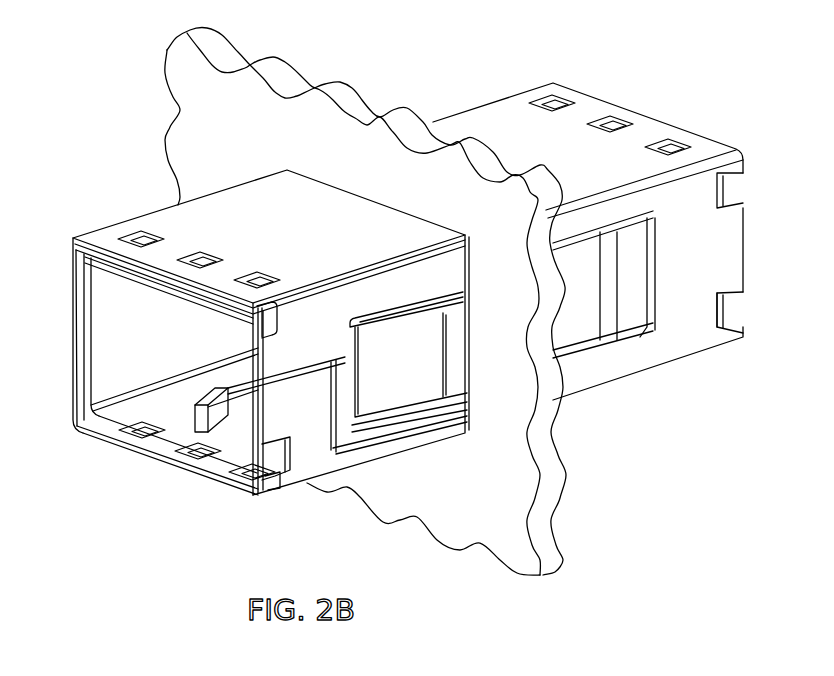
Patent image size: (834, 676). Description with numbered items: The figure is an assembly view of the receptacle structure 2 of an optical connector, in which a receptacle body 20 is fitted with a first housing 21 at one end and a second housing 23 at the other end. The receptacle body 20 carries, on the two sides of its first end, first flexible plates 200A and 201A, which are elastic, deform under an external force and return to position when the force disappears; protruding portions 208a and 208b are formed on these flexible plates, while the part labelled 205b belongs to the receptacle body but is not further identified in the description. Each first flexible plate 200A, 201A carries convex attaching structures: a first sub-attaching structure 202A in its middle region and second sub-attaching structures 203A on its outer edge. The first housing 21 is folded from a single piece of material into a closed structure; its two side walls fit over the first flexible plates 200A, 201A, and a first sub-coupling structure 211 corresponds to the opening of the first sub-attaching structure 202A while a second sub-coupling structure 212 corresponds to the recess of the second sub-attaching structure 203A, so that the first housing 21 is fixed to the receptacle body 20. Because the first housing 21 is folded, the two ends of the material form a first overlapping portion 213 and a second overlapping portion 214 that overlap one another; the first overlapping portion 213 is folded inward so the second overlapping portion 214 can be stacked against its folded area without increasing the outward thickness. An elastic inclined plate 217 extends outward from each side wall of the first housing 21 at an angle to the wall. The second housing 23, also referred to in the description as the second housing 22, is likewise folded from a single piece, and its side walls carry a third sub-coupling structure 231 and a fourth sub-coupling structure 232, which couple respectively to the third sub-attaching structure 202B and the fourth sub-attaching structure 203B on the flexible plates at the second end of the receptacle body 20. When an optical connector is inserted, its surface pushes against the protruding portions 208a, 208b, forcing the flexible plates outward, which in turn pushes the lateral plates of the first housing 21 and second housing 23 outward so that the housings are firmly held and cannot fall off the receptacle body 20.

The receptacle structure 2 is at (139, 107).
The receptacle body 20 is at (122, 438).
The first housing 21 is at (157, 218).
The second housing 22 is at (338, 126).
The second housing 23 is at (535, 95).
The first flexible plate 200A is at (253, 331).
The first flexible plate 201A is at (90, 273).
The first sub-attaching structure 202A is at (469, 293).
The third sub-attaching structure 202B is at (583, 348).
The second sub-attaching structure 203A is at (275, 473).
The fourth sub-attaching structure 203B is at (733, 184).
The bottom plate 205b is at (190, 425).
The protruding portion 208a is at (104, 278).
The protruding portion 208b is at (130, 402).
The first sub-coupling structure 211 is at (375, 317).
The second sub-coupling structure 212 is at (269, 474).
The first overlapping portion 213 is at (200, 425).
The second overlapping portion 214 is at (312, 368).
The elastic inclined plate 217 is at (417, 400).
The third sub-coupling structure 231 is at (653, 330).
The fourth sub-coupling structure 232 is at (742, 337).